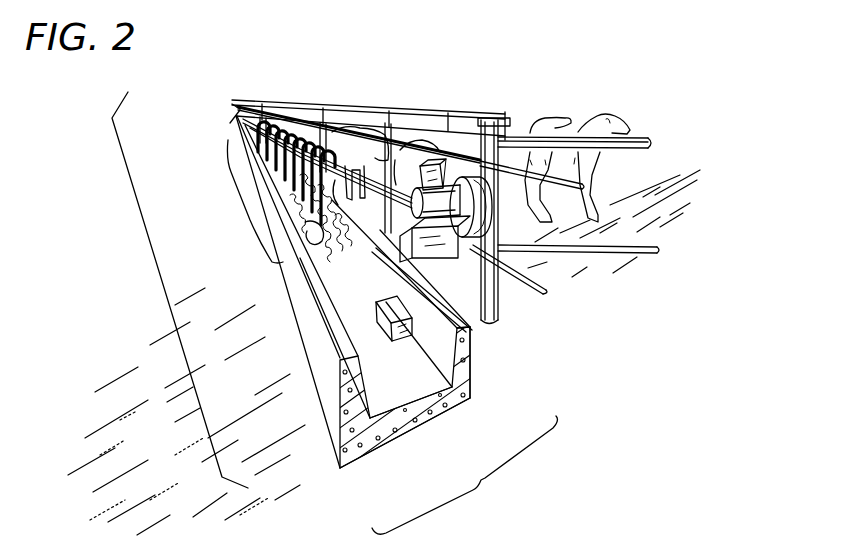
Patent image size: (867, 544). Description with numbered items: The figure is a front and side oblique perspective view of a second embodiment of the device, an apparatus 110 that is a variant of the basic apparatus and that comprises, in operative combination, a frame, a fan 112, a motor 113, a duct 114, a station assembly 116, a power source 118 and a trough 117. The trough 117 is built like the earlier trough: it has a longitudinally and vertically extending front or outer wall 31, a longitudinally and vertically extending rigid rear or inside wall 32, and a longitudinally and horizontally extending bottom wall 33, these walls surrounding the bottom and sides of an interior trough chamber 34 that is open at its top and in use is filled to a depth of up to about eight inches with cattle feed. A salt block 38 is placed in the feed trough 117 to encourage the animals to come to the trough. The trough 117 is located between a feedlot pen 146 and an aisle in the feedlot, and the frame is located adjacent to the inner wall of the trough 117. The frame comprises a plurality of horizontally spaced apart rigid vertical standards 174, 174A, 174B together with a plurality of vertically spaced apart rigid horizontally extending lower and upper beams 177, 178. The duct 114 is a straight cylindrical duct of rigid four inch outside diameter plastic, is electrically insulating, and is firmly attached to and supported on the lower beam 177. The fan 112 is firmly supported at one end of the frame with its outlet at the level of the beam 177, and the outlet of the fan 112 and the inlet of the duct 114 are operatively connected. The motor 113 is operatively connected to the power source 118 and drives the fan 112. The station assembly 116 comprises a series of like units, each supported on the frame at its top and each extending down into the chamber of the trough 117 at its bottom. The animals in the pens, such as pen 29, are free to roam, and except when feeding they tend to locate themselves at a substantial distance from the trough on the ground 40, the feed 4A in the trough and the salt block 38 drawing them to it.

The feed material 4A is at (308, 236).
The pen 29 is at (683, 196).
The front or outer wall 31 is at (341, 405).
The rear or inside wall 32 is at (464, 394).
The bottom wall 33 is at (437, 413).
The interior trough chamber 34 is at (407, 396).
The salt block 38 is at (410, 342).
The ground surface 40 is at (166, 483).
The apparatus 110 is at (180, 290).
The fan 112 is at (482, 208).
The motor 113 is at (451, 207).
The duct 114 is at (431, 166).
The station assembly 116 is at (233, 196).
The trough 117 is at (464, 475).
The power source 118 is at (442, 168).
The feedlot pen 146 is at (280, 122).
The vertical standard 174 is at (392, 248).
The vertical standard 174A is at (320, 126).
The vertical standard 174B is at (290, 112).
The lower beam 177 is at (540, 298).
The upper beam 178 is at (360, 158).